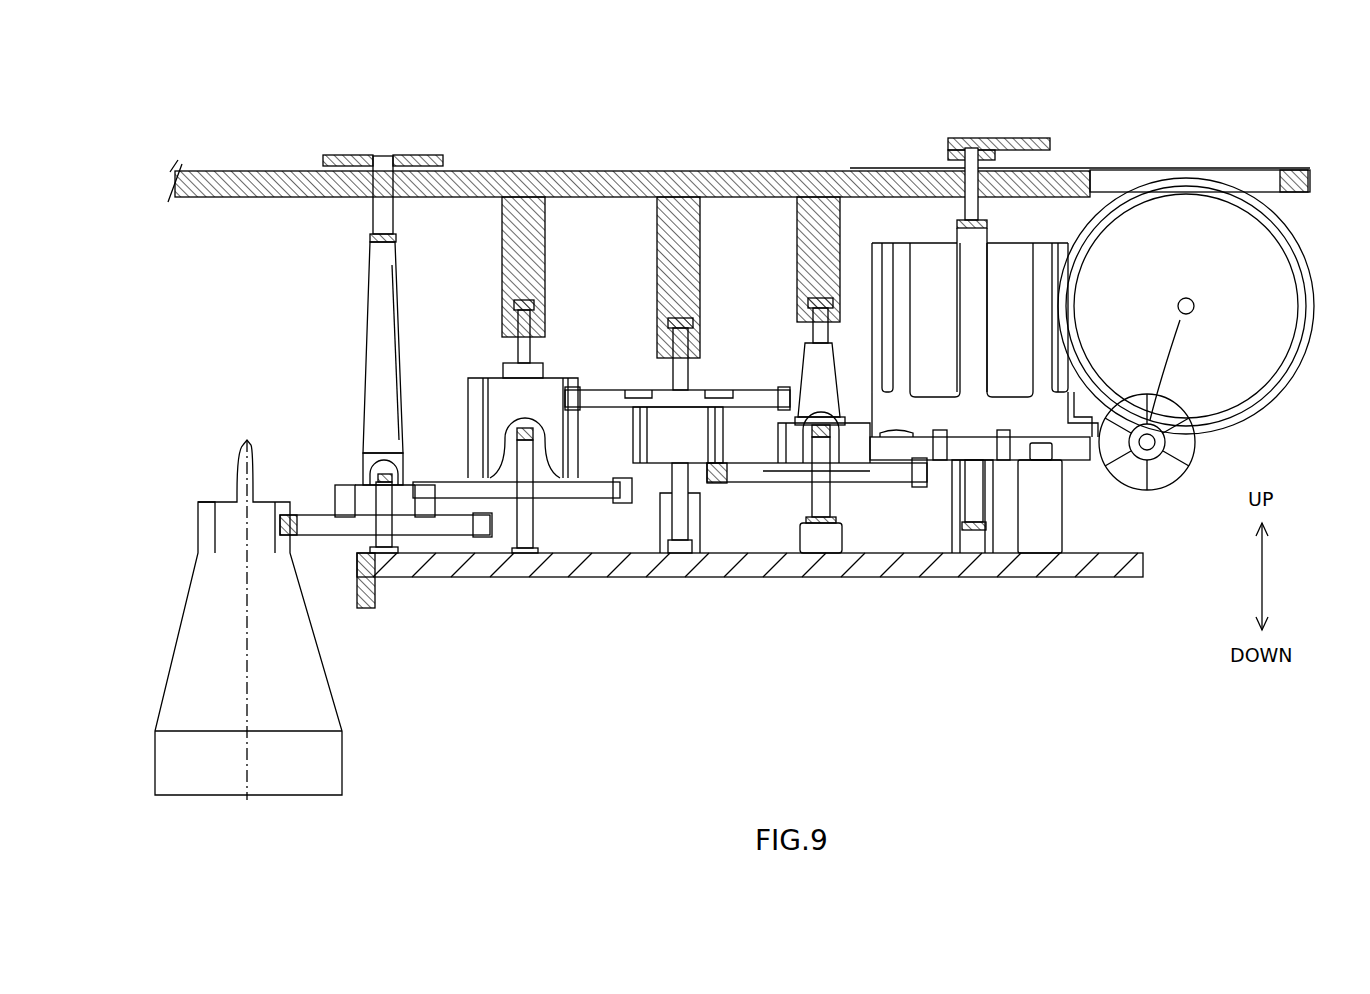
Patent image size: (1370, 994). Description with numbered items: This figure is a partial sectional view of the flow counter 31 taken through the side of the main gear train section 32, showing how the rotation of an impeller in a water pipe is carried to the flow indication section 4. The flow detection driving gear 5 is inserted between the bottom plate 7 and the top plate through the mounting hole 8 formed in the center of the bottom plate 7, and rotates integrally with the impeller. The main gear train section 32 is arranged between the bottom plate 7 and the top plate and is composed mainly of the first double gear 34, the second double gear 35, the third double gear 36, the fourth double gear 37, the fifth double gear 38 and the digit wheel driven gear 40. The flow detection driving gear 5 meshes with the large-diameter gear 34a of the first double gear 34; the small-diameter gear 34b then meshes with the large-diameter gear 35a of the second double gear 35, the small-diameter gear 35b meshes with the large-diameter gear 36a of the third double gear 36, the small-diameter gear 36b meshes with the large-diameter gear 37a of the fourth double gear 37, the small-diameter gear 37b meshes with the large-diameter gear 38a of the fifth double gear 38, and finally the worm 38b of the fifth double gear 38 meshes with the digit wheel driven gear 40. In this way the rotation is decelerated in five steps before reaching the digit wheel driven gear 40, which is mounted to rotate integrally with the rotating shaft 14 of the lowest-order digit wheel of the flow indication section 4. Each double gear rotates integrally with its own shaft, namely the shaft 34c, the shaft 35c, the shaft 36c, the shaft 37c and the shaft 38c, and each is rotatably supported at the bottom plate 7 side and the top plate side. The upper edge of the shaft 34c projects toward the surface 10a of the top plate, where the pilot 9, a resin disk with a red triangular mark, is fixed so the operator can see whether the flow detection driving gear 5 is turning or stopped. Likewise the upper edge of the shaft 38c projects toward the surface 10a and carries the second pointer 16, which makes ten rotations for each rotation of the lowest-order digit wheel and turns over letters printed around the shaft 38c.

The surface of top plate 10a is at (250, 170).
The flow indication section 4 is at (1218, 170).
The flow counter 31 is at (1288, 166).
The pilot 9 is at (410, 165).
The shaft of first double gear 34c is at (378, 210).
The small-diameter gear of first double gear 34b is at (347, 470).
The large-diameter gear of first double gear 34a is at (303, 510).
The mounting hole 8 is at (345, 585).
The first double gear 34 is at (453, 537).
The main gear train section 32 is at (567, 512).
The shaft of second double gear 35c is at (518, 340).
The second double gear 35 is at (593, 502).
The large-diameter gear of second double gear 35a is at (440, 485).
The small-diameter gear of second double gear 35b is at (563, 380).
The shaft of third double gear 36c is at (690, 370).
The large-diameter gear of third double gear 36a is at (590, 400).
The third double gear 36 is at (652, 492).
The small-diameter gear of third double gear 36b is at (725, 492).
The shaft of fourth double gear 37c is at (805, 330).
The fourth double gear 37 is at (772, 492).
The large-diameter gear of fourth double gear 37a is at (760, 497).
The small-diameter gear of fourth double gear 37b is at (908, 484).
The worm of fifth double gear 38b is at (1060, 260).
The second pointer 16 is at (1010, 137).
The shaft of fifth double gear 38c is at (963, 207).
The fifth double gear 38 is at (1000, 468).
The large-diameter gear of fifth double gear 38a is at (930, 472).
The digit wheel driven gear 40 is at (1288, 395).
The rotating shaft 14 is at (1195, 305).
The bottom plate 7 is at (1113, 578).
The flow detection driving gear 5 is at (197, 500).